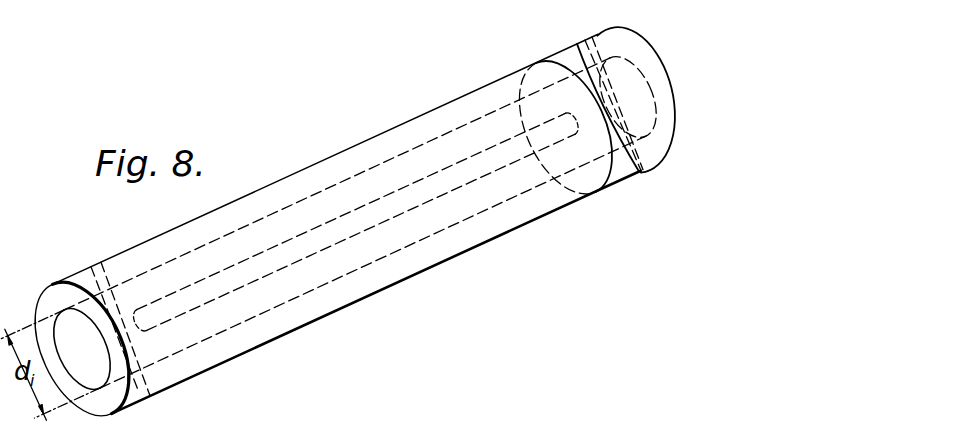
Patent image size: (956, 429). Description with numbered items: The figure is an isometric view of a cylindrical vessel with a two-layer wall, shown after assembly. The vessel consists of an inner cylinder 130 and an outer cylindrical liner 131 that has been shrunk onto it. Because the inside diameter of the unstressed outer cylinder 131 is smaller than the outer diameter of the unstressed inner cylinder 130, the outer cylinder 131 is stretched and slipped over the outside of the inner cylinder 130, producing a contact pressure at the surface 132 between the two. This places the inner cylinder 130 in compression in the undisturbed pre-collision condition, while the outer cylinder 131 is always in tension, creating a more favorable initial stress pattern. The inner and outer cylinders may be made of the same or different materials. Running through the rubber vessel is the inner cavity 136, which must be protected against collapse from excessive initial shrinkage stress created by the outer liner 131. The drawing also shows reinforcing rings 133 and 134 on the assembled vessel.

The inner cylinder 130 is at (282, 228).
The outer cylindrical liner 131 is at (383, 145).
The surface 132 is at (438, 232).
The reinforcing ring 133 is at (65, 281).
The reinforcing ring 134 is at (639, 172).
The inner cavity 136 is at (478, 167).